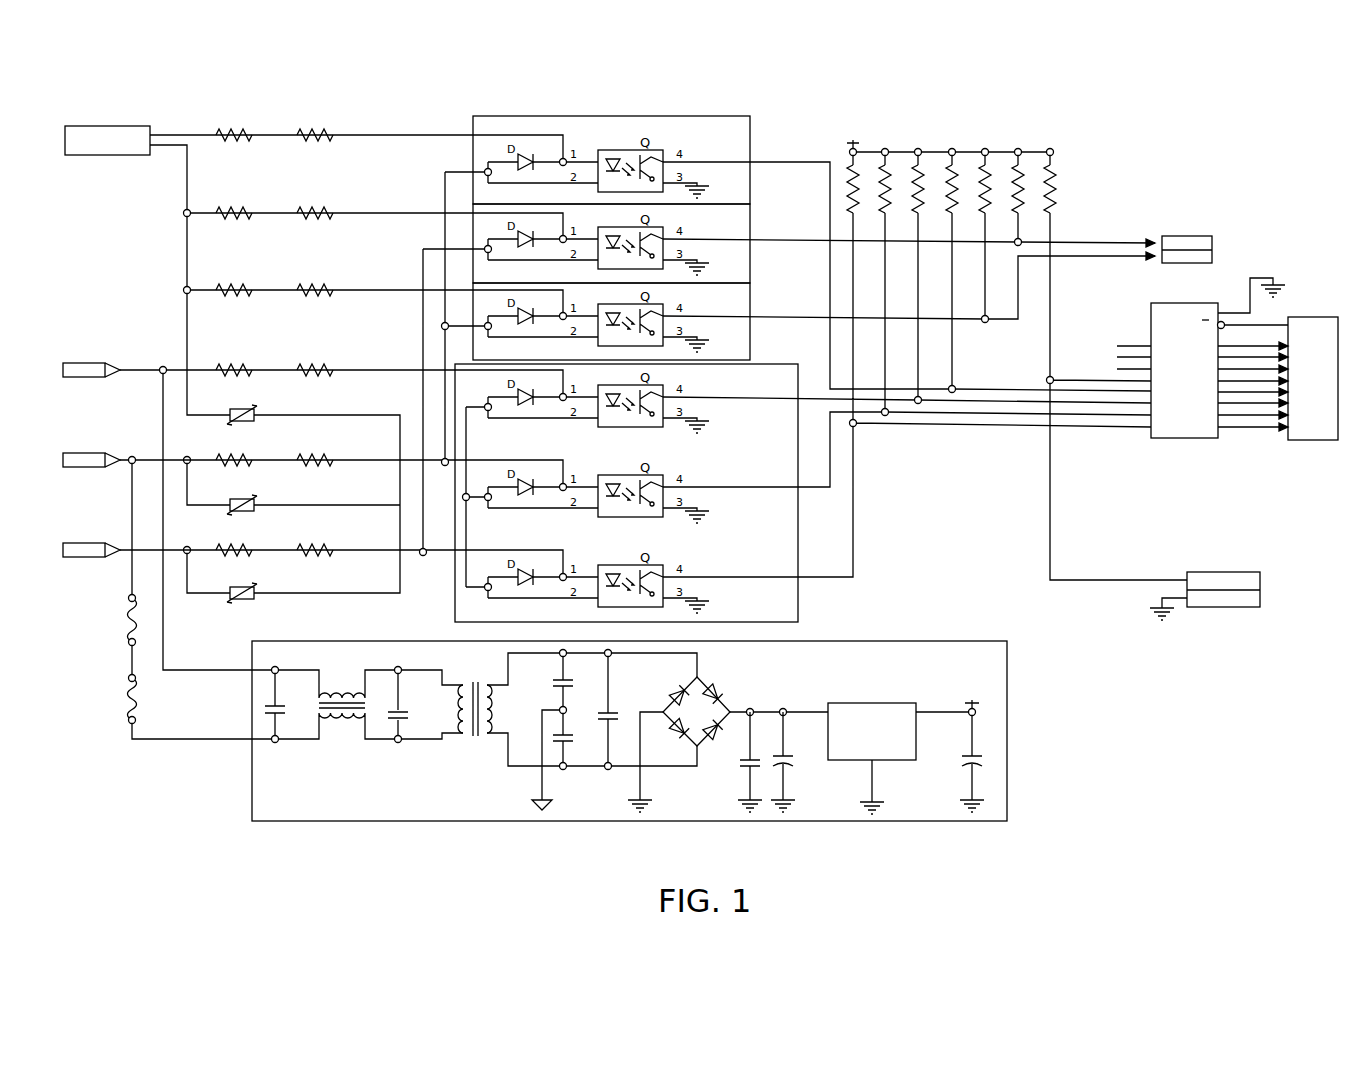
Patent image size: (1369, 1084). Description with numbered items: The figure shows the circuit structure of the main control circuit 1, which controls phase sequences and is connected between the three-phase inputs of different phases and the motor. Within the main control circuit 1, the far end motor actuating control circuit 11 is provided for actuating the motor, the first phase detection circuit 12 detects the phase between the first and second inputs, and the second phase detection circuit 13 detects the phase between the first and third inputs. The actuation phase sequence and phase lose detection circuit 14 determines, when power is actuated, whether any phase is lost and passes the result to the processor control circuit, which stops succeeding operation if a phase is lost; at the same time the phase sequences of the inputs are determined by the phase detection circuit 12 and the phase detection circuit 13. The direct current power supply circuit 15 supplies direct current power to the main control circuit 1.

The main control circuit 1 is at (406, 106).
The far end motor actuating control circuit 11 is at (701, 116).
The L1–L2 phase detection circuit 12 is at (751, 212).
The L1–L3 phase detection circuit 13 is at (751, 297).
The actuation phase sequence and phase lose detection circuit 14 is at (798, 372).
The D. C. power supply circuit 15 is at (1007, 700).